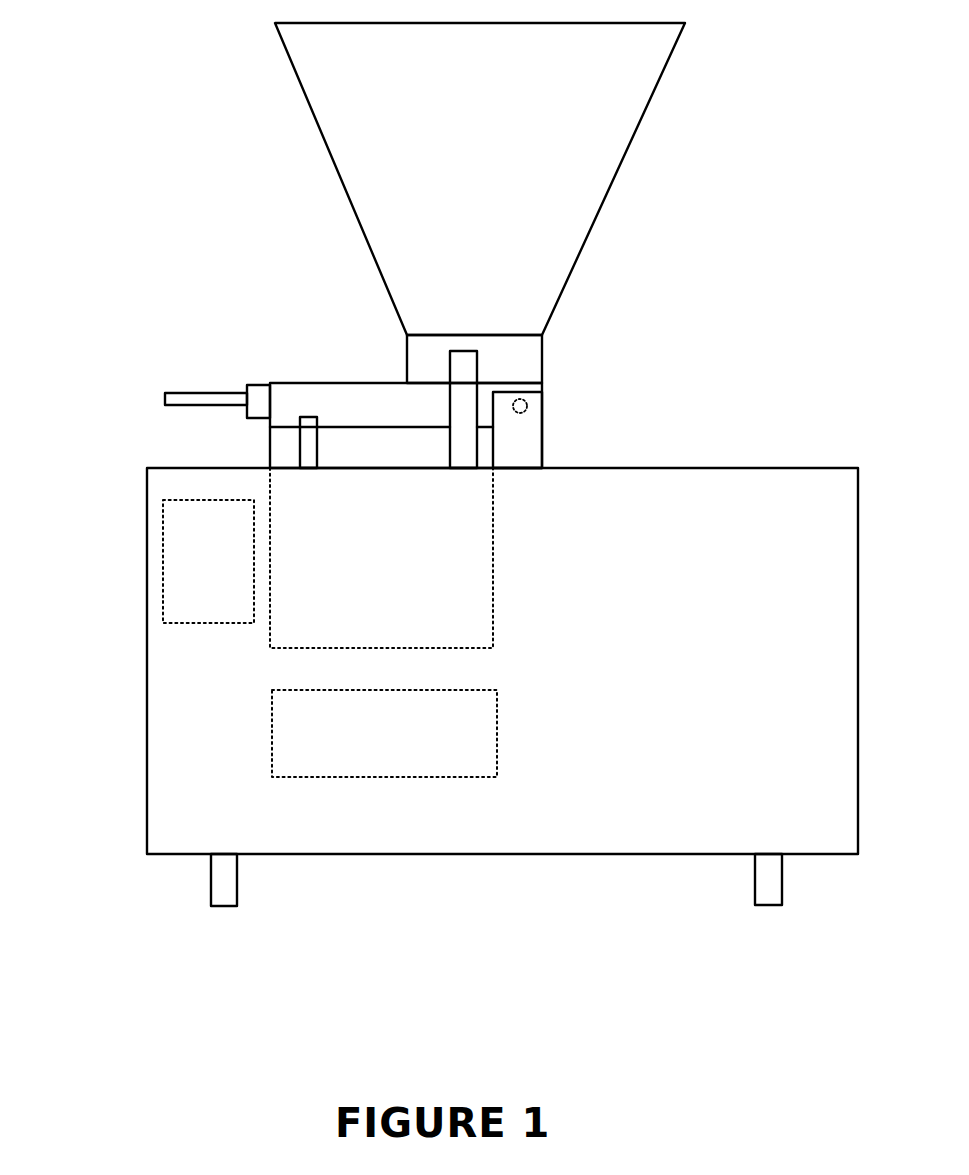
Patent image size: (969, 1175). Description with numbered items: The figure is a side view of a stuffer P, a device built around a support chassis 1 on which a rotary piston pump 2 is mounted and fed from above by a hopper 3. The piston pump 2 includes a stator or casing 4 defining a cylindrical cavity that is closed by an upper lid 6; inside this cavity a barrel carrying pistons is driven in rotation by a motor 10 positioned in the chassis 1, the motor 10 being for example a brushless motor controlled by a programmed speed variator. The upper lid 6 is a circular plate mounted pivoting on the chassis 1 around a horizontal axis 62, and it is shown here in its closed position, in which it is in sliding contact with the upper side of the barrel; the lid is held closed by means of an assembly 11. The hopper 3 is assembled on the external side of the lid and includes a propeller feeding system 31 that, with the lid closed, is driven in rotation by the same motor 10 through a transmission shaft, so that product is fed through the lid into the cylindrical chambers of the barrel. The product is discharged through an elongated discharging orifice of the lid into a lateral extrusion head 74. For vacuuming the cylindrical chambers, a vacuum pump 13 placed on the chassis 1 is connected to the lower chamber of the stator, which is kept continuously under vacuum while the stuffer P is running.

The support chassis 1 is at (147, 666).
The rotary piston pump 2 is at (333, 380).
The hopper 3 is at (590, 227).
The stator or casing 4 is at (267, 430).
The upper lid 6 is at (393, 382).
The motor 10 is at (272, 737).
The assembly for maintaining the lid 11 is at (297, 457).
The vacuum pump 13 is at (187, 556).
The propeller feeding system 31 is at (544, 352).
The horizontal axis 62 is at (528, 406).
The lateral extrusion head 74 is at (262, 390).
The stuffer P is at (713, 403).